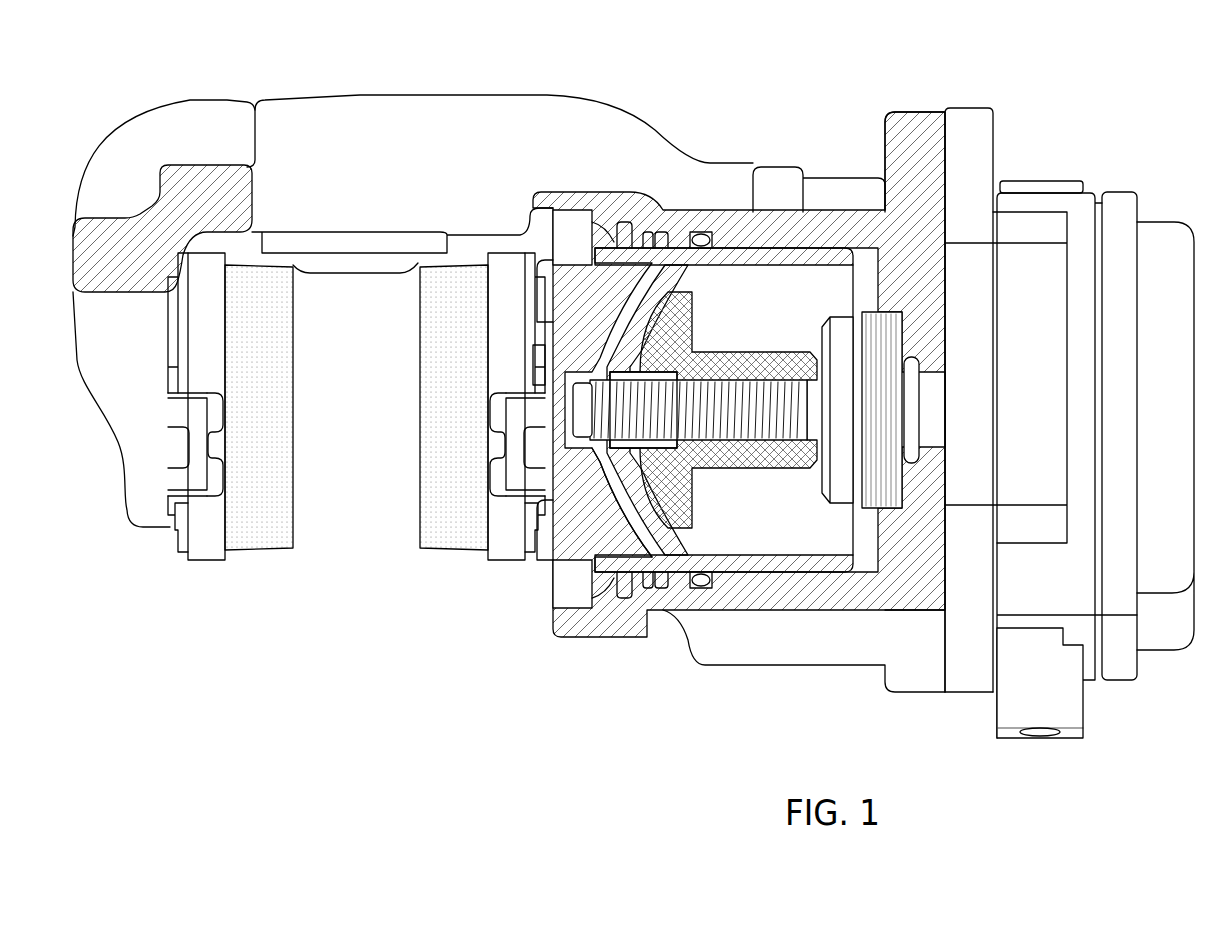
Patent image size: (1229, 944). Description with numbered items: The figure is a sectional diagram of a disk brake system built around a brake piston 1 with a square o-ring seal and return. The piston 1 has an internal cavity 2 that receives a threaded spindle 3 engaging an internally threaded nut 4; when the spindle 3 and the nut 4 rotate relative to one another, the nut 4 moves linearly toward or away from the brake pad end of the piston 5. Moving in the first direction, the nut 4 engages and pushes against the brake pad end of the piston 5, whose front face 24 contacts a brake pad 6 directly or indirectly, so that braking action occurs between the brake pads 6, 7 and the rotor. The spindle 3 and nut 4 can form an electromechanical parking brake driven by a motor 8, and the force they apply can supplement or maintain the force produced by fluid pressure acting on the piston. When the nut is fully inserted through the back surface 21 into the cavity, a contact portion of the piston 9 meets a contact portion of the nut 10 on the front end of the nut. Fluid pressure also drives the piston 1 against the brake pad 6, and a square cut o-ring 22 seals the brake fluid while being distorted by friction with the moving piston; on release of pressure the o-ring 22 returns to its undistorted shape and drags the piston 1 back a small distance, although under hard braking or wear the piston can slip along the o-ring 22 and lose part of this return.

The piston 1 is at (747, 257).
The internal cavity 2 is at (783, 290).
The threaded spindle 3 is at (767, 437).
The nut 4 is at (720, 467).
The brake pad end of the piston 5 is at (583, 305).
The brake pad 6 is at (450, 538).
The brake pad 7 is at (258, 538).
The motor 8 is at (1033, 280).
The contact portion of the piston 9 is at (610, 480).
The contact portion of the nut 10 is at (630, 478).
The back surface 21 is at (876, 247).
The square cut o-ring 22 is at (697, 238).
The front face 24 is at (543, 313).